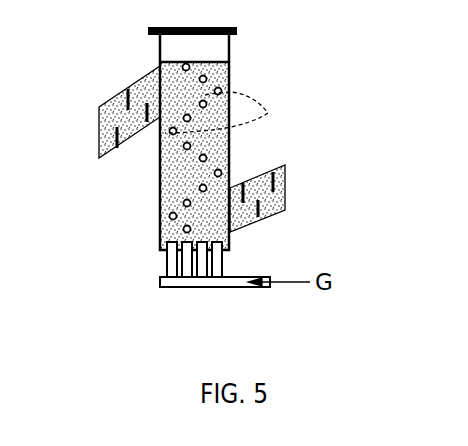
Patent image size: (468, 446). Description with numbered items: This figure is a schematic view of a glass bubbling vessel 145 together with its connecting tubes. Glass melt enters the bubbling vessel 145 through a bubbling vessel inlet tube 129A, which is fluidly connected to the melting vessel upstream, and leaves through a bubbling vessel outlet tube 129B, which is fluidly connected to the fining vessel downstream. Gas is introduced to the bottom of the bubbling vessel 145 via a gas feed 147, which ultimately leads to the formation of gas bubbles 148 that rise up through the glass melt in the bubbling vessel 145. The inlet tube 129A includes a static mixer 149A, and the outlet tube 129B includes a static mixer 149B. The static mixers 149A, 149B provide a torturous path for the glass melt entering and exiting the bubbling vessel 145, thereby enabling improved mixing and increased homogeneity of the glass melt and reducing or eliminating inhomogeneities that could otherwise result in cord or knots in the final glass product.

The bubbling vessel 145 is at (231, 70).
The gas feed 147 is at (205, 288).
The gas bubbles 148 is at (268, 113).
The static mixer 149A is at (127, 100).
The bubbling vessel inlet tube 129A is at (128, 140).
The static mixer 149B is at (265, 205).
The bubbling vessel outlet tube 129B is at (268, 215).